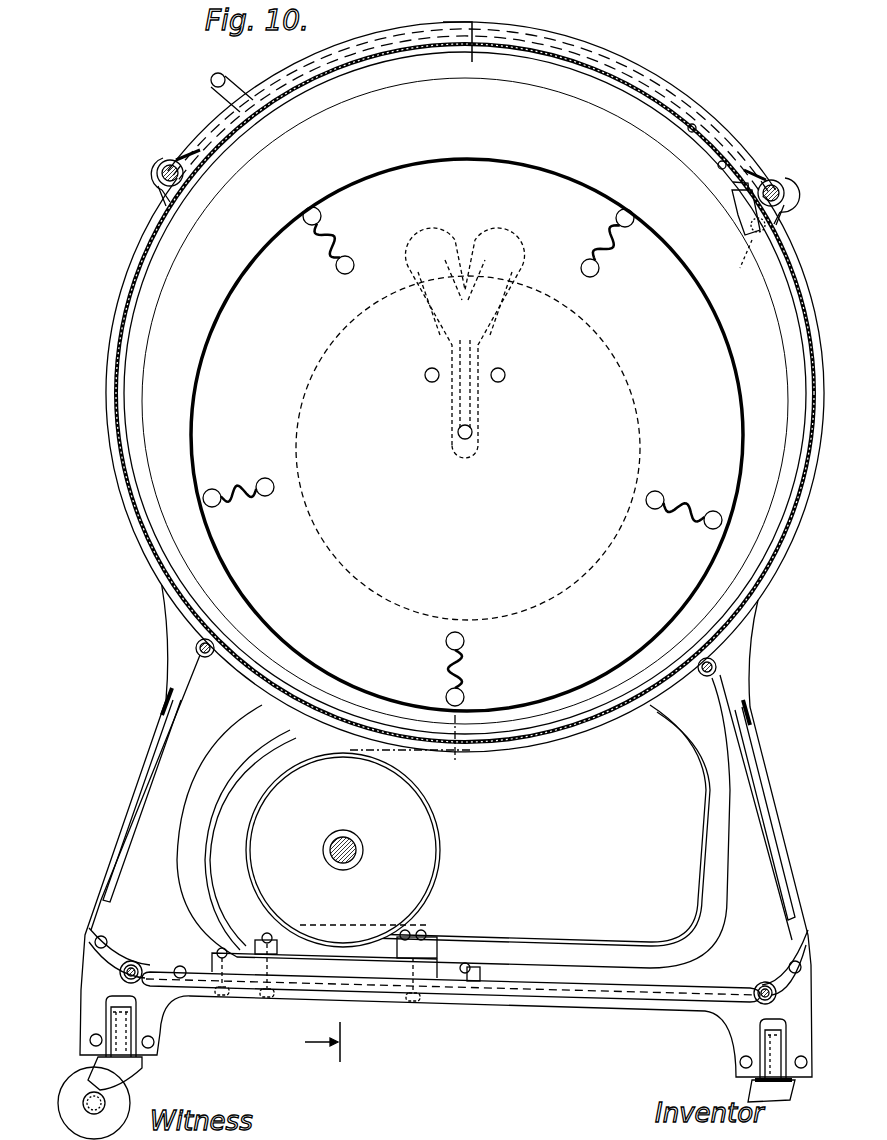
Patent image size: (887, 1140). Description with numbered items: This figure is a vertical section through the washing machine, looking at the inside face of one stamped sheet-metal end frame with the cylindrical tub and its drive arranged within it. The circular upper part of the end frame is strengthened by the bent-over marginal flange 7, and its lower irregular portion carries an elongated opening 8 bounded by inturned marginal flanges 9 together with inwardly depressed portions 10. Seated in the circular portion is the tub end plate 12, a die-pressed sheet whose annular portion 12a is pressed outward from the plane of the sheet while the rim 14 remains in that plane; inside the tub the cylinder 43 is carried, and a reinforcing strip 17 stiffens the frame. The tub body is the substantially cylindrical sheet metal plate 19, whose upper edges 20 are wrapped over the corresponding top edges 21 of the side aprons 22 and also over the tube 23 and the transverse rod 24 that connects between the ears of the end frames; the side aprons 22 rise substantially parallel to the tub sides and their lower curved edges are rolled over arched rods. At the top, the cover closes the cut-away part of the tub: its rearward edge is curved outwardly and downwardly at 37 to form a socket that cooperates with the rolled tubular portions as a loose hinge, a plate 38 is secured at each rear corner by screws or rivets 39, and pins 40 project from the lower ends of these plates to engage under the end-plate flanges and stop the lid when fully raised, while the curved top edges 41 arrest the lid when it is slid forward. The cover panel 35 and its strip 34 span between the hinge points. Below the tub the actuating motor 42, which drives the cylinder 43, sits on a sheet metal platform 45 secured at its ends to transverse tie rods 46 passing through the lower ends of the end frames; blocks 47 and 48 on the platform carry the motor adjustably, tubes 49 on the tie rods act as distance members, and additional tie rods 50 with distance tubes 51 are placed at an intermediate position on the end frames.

The flange 7 is at (130, 525).
The elongated opening 8 is at (453, 823).
The inturned marginal flanges 9 is at (698, 838).
The inwardly depressed portions 10 is at (441, 797).
The end plate 12 is at (465, 401).
The annular portion 12a is at (607, 125).
The rim 14 is at (668, 130).
The reinforcing strip 17 is at (166, 686).
The cylindrical sheet metal plate 19 is at (117, 395).
The upper edges 20 is at (152, 172).
The top edges 21 is at (173, 163).
The side aprons 22 is at (106, 428).
The tube 23 is at (157, 190).
The transverse rod 24 is at (153, 180).
The cover strip 34 is at (546, 52).
The cover 35 is at (379, 46).
The curved edge of cover 37 is at (166, 160).
The plate 38 is at (741, 222).
The screws or rivets 39 is at (712, 166).
The pins 40 is at (752, 250).
The curved top edges 41 is at (740, 186).
The actuating motor 42 is at (343, 850).
The cylinder 43 is at (240, 275).
The sheet metal platform 45 is at (560, 1004).
The transverse tie rods 46 is at (120, 970).
The block 47 is at (481, 977).
The block 48 is at (437, 960).
The tubes 49 is at (142, 964).
The tie rods 50 is at (198, 648).
The distance tubes 51 is at (208, 660).